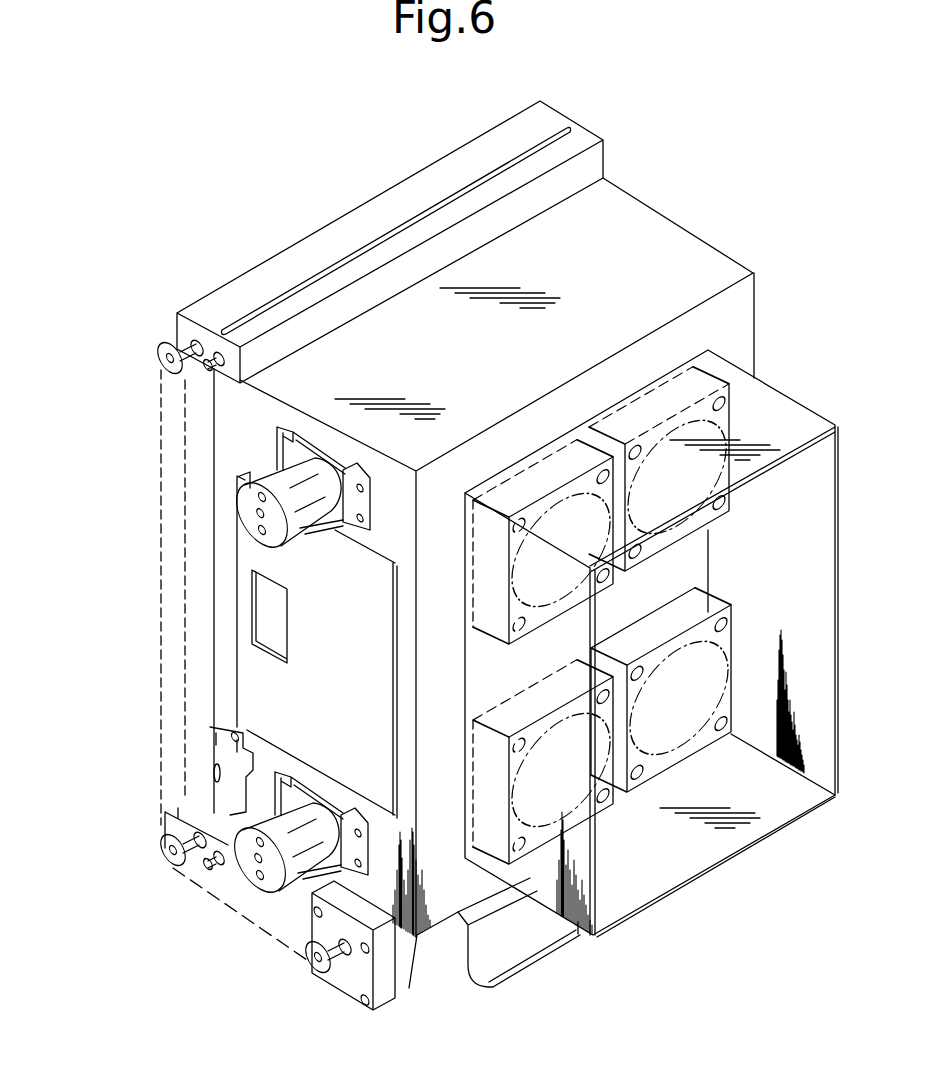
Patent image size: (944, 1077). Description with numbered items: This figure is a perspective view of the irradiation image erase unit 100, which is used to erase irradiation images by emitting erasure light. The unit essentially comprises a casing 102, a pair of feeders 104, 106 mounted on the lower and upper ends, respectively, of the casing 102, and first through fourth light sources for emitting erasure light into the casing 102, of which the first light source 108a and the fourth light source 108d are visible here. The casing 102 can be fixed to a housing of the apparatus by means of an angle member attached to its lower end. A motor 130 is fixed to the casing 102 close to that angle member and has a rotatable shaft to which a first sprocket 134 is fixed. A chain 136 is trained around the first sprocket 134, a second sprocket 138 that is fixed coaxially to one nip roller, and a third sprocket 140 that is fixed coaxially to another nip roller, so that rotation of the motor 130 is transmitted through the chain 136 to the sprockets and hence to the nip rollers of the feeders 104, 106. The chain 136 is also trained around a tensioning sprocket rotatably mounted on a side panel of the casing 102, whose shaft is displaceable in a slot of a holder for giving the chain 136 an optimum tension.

The irradiation image erase unit 100 is at (700, 238).
The casing 102 is at (745, 265).
The feeder 104 is at (177, 820).
The feeder 106 is at (247, 270).
The first light source 108a is at (277, 480).
The fourth light source 108d is at (302, 812).
The motor 130 is at (387, 987).
The first sprocket 134 is at (327, 972).
The chain 136 is at (233, 910).
The second sprocket 138 is at (165, 849).
The third sprocket 140 is at (158, 355).